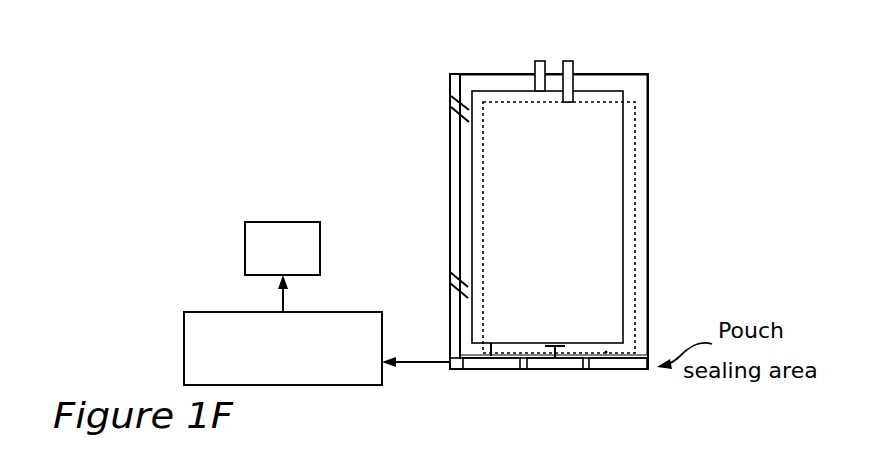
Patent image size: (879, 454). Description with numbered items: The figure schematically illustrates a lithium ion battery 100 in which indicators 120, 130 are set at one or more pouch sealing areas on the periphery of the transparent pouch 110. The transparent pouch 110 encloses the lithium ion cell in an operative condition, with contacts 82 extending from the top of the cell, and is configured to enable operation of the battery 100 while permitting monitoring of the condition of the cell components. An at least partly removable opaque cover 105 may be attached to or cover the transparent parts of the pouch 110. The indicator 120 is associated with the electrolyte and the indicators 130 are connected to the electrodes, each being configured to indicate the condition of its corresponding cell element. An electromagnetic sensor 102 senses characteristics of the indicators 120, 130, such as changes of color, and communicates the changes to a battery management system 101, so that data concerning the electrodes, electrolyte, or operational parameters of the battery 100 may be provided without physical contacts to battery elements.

The lithium ion battery 100 is at (190, 66).
The battery management system (BMS) 101 is at (245, 243).
The electromagnetic sensor 102 is at (184, 345).
The opaque cover 105 is at (490, 81).
The transparent pouch 110 is at (450, 84).
The contacts 82 is at (567, 61).
The indicator 120 is at (552, 369).
The indicator 130 is at (489, 369).